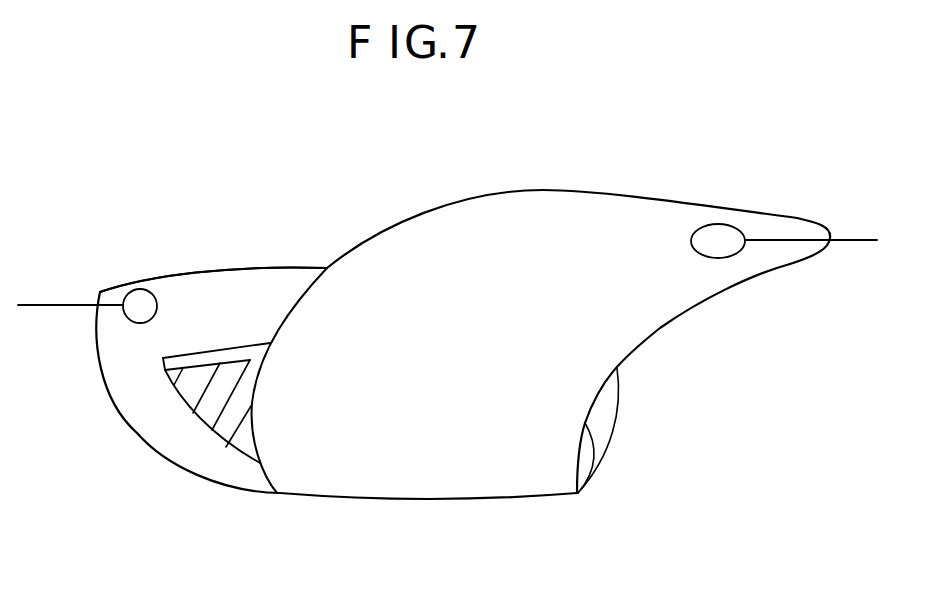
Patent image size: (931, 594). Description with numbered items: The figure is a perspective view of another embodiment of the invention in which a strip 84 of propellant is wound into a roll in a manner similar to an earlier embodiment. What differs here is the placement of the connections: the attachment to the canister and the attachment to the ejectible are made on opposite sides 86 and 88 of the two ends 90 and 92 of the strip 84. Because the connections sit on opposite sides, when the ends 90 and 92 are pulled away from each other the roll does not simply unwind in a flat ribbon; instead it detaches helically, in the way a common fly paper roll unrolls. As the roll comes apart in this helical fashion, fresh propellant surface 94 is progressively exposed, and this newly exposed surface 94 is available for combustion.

The strip 84 is at (447, 343).
The side 86 is at (153, 266).
The side 88 is at (757, 200).
The end 90 is at (655, 215).
The end 92 is at (250, 278).
The propellant surface 94 is at (228, 437).